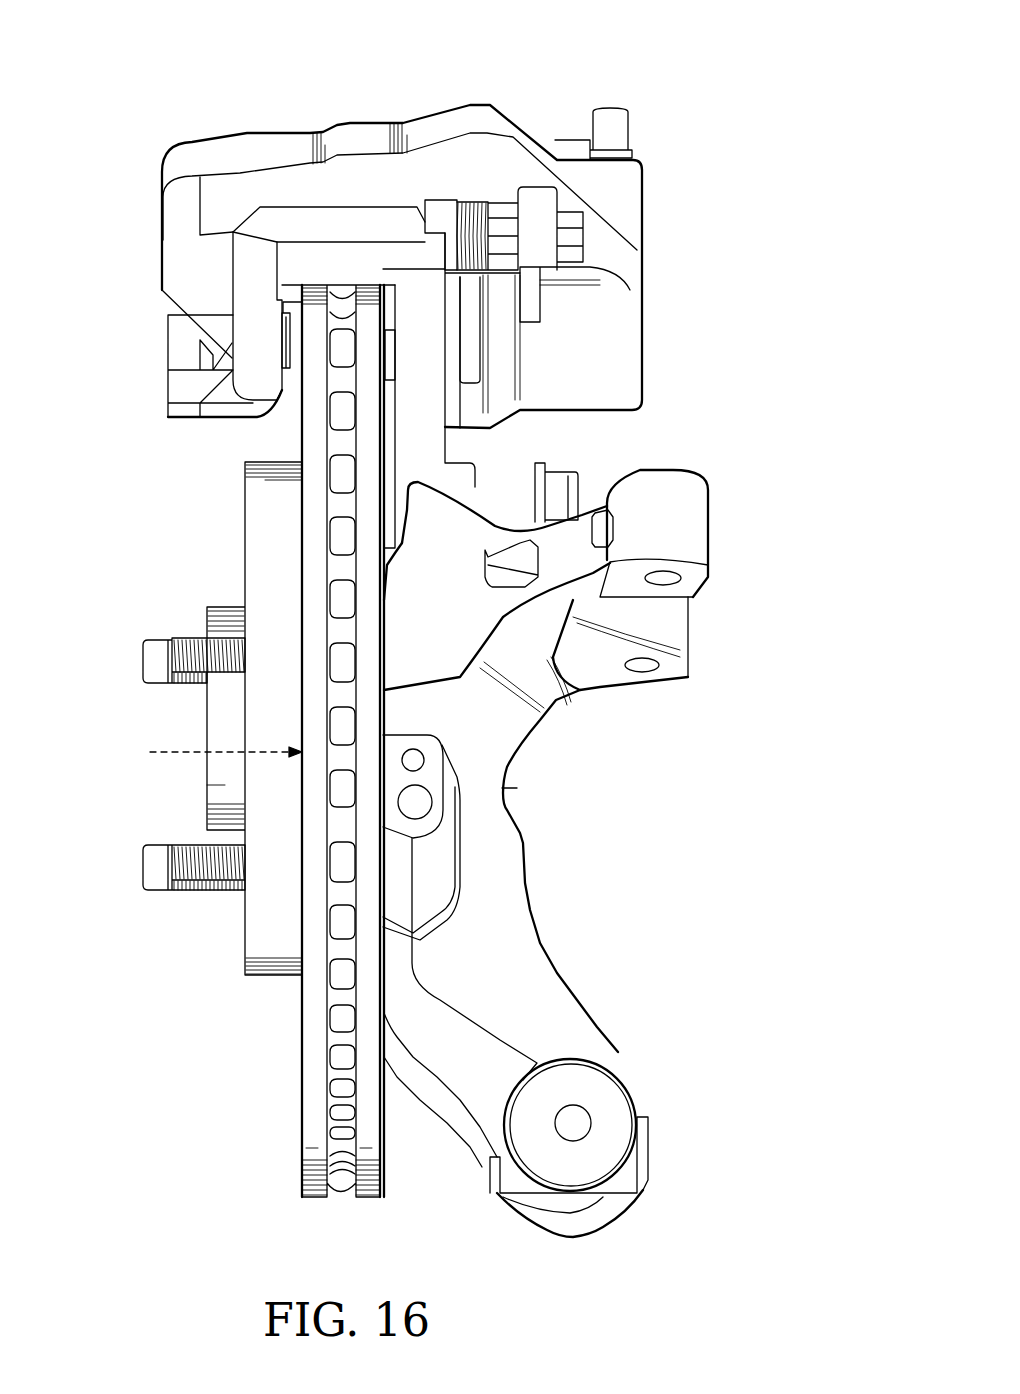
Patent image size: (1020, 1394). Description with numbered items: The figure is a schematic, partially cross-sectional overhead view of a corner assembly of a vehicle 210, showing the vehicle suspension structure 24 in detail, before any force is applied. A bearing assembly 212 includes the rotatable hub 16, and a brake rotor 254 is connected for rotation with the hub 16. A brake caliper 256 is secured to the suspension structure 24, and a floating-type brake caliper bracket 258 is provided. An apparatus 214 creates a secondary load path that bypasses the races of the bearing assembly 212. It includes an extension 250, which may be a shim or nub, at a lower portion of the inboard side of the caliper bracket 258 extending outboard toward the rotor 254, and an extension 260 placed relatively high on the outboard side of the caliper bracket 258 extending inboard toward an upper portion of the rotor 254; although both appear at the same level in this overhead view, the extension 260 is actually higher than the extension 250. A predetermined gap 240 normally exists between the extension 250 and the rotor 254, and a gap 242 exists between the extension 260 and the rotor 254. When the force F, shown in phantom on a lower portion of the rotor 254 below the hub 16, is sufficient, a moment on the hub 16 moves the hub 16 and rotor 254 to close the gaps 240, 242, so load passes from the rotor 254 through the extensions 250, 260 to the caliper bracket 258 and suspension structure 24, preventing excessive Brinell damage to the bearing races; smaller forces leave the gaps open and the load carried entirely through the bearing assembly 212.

The rotatable hub 16 is at (227, 607).
The vehicle suspension structure 24 is at (517, 788).
The vehicle 210 is at (667, 295).
The bearing assembly 212 is at (210, 905).
The apparatus 214 is at (291, 407).
The gap 240 is at (388, 388).
The gap 242 is at (293, 313).
The extension 250 is at (393, 357).
The brake rotor 254 is at (302, 423).
The brake caliper 256 is at (462, 120).
The brake caliper bracket 258 is at (353, 220).
The extension 260 is at (283, 340).
The force F is at (157, 745).